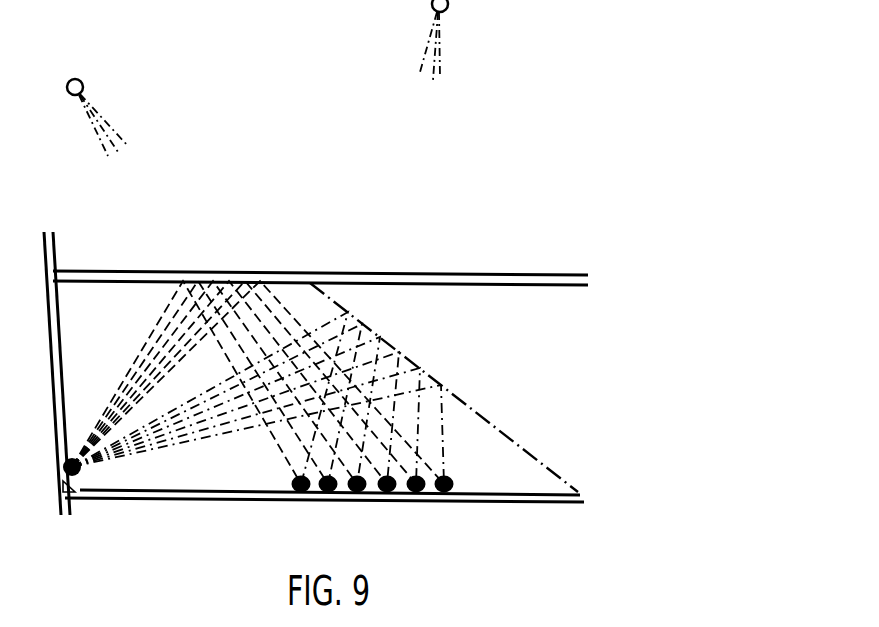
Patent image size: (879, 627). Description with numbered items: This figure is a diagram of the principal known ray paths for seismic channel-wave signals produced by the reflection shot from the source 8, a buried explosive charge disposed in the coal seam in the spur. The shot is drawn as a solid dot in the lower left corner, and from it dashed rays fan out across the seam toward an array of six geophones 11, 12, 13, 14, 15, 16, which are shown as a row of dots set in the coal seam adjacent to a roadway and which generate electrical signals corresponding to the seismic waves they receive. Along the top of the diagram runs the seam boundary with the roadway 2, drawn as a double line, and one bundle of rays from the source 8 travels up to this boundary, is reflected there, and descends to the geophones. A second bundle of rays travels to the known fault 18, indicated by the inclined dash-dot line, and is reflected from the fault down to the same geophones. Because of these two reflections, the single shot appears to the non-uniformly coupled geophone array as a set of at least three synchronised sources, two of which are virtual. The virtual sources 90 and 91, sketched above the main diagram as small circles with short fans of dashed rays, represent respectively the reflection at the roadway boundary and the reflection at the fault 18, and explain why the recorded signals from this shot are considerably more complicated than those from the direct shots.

The mine roadway 2 is at (460, 278).
The ninth source 8 is at (78, 473).
The geophone 11 is at (301, 492).
The geophone 12 is at (328, 492).
The geophone 13 is at (357, 492).
The geophone 14 is at (387, 492).
The geophone 15 is at (416, 492).
The geophone 16 is at (444, 492).
The known fault 18 is at (455, 393).
The virtual source 90 is at (82, 80).
The virtual source 91 is at (448, 10).